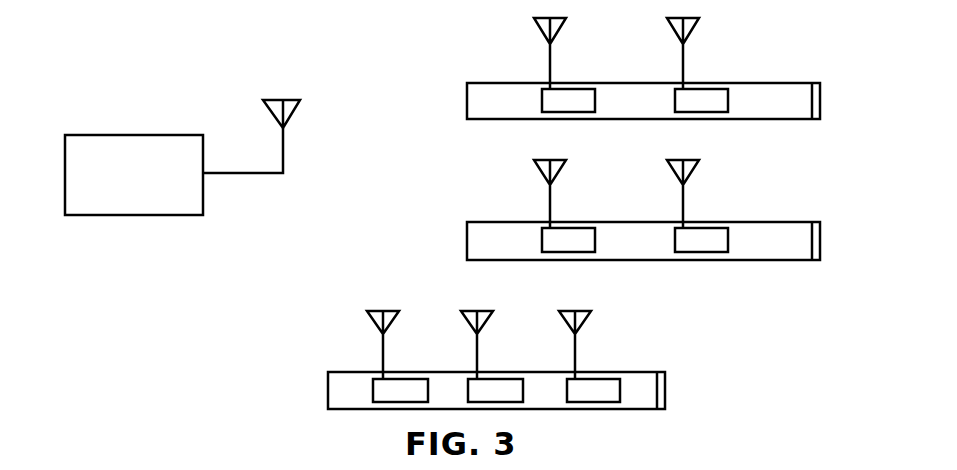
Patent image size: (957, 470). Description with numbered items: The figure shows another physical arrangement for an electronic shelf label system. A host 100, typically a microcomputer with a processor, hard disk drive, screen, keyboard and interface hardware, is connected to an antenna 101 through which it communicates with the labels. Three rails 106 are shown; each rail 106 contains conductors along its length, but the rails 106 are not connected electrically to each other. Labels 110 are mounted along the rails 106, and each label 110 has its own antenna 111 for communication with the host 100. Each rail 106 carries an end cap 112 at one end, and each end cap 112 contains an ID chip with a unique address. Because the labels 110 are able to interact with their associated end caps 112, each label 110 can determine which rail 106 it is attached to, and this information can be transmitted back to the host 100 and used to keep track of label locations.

The host 100 is at (133, 133).
The antenna 101 is at (297, 110).
The rail 106 is at (328, 387).
The label 110 is at (597, 387).
The antenna 111 is at (377, 322).
The end cap 112 is at (660, 385).